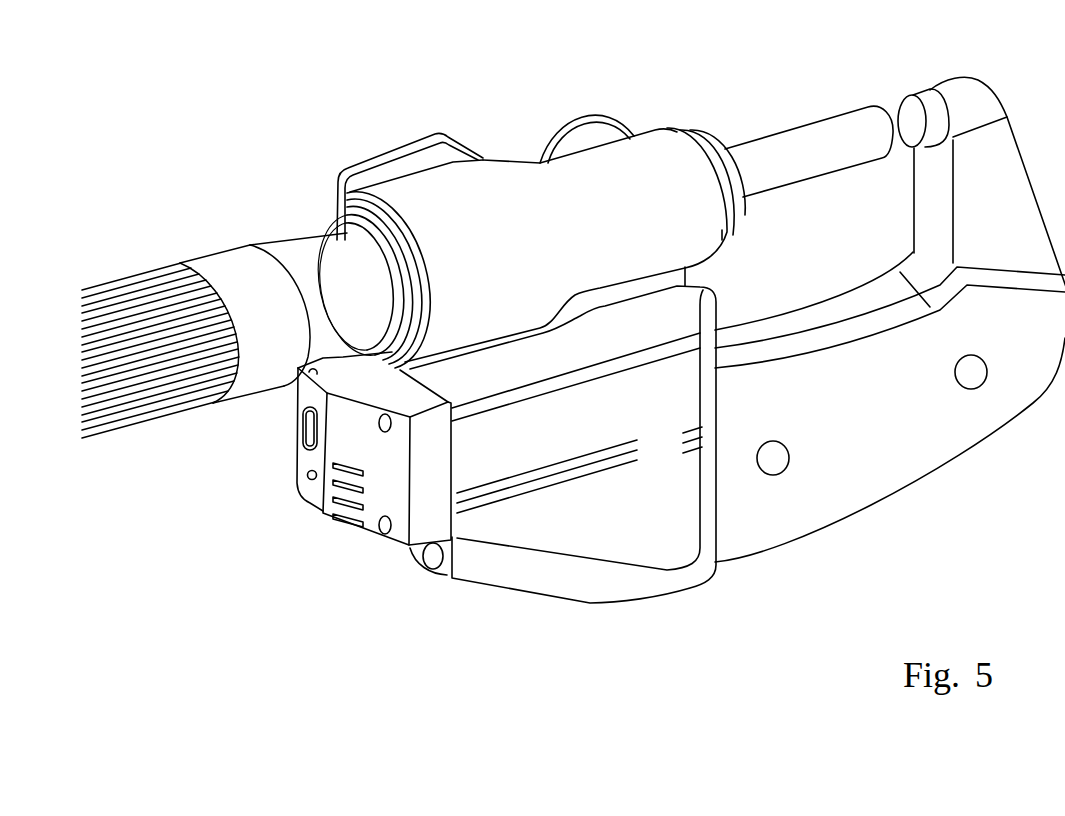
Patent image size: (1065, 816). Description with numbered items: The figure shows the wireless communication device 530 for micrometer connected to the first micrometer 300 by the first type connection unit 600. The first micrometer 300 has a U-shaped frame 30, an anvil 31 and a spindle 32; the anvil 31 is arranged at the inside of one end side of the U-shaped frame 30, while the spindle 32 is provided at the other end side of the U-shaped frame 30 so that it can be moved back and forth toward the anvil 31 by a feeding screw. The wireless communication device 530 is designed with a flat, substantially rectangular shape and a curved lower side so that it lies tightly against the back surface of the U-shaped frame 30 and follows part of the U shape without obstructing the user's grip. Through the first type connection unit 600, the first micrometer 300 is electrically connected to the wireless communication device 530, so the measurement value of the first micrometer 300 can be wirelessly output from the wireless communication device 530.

The first micrometer 300 is at (573, 335).
The U-shaped frame 30 is at (953, 445).
The anvil 31 is at (928, 102).
The spindle 32 is at (782, 142).
The wireless communication device for micrometer 530 is at (583, 563).
The first type connection unit 600 is at (365, 532).